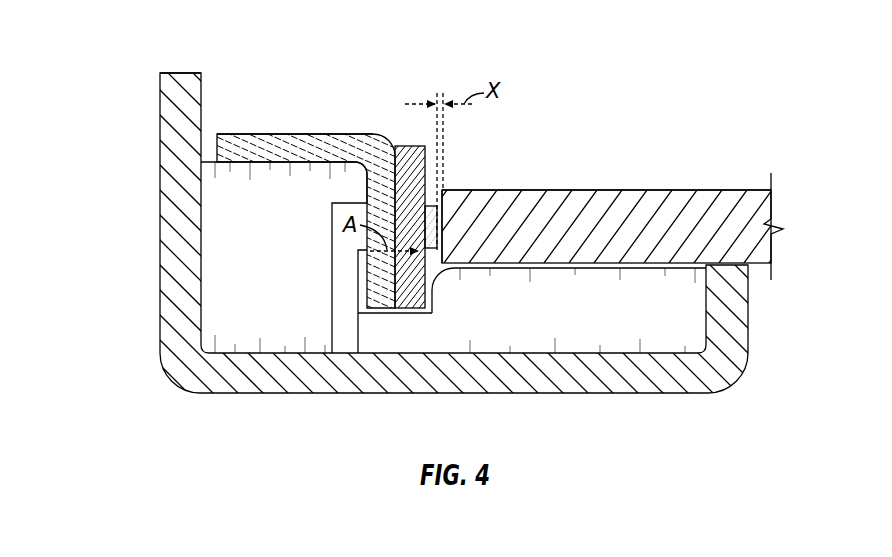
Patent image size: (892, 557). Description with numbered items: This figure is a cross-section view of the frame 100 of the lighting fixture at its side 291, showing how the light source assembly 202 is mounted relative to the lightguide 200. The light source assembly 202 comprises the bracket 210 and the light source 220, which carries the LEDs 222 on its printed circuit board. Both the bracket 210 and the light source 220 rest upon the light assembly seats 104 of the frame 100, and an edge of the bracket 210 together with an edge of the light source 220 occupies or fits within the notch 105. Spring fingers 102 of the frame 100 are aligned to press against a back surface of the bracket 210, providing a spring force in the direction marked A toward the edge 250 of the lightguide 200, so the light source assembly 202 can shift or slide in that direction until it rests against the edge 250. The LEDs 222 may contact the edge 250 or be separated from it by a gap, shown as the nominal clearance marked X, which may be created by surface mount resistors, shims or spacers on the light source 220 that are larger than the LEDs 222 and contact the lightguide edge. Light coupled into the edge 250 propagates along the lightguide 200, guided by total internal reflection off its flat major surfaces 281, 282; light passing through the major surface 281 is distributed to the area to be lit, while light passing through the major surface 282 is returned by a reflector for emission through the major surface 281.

The frame 100 is at (160, 160).
The spring fingers 102 is at (335, 262).
The light assembly seats 104 is at (279, 222).
The notch 105 is at (435, 315).
The lightguide 200 is at (623, 208).
The light source assembly 202 is at (272, 105).
The bracket 210 is at (314, 146).
The light source 220 is at (405, 150).
The LEDs 222 is at (433, 222).
The edge of the lightguide 250 is at (433, 232).
The major surface of the lightguide 281 is at (512, 268).
The major surface of the lightguide 282 is at (540, 190).
The side of the lighting fixture 291 is at (126, 54).